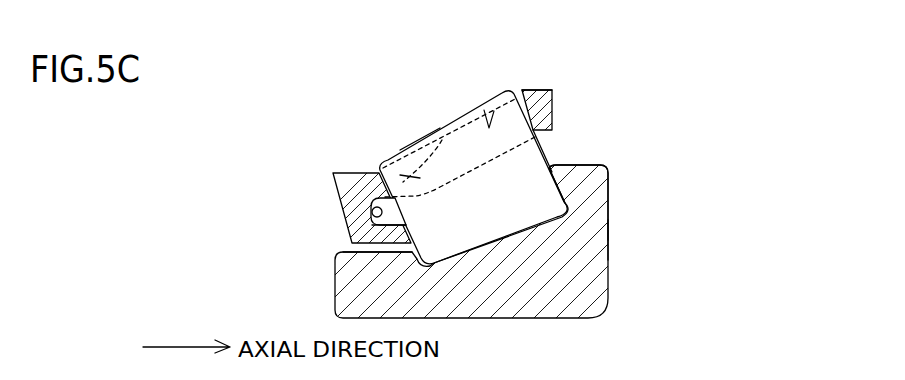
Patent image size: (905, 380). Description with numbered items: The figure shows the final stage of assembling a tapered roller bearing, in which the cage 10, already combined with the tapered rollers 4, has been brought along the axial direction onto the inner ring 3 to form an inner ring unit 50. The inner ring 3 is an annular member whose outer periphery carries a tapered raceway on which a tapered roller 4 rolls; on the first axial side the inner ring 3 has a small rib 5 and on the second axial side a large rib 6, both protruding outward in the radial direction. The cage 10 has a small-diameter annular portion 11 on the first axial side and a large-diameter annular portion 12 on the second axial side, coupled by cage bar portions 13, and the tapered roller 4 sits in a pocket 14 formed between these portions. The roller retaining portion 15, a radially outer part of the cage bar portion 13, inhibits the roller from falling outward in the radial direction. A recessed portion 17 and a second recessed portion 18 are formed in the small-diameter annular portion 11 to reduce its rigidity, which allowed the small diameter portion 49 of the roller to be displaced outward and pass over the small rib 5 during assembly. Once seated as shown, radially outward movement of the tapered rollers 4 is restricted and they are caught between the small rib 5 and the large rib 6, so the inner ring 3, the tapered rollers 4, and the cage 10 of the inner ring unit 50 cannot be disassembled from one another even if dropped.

The inner ring 3 is at (526, 297).
The tapered roller 4 is at (447, 122).
The small rib 5 is at (347, 288).
The large rib 6 is at (582, 192).
The cage 10 is at (541, 88).
The small-diameter annular portion 11 is at (360, 195).
The large-diameter annular portion 12 is at (543, 105).
The cage bar portion 13 is at (442, 140).
The pocket 14 is at (494, 108).
The roller retaining portion 15 is at (418, 152).
The recessed portion 17 is at (368, 226).
The second recessed portion 18 is at (371, 212).
The small diameter portion 49 is at (410, 177).
The inner ring unit 50 is at (611, 236).